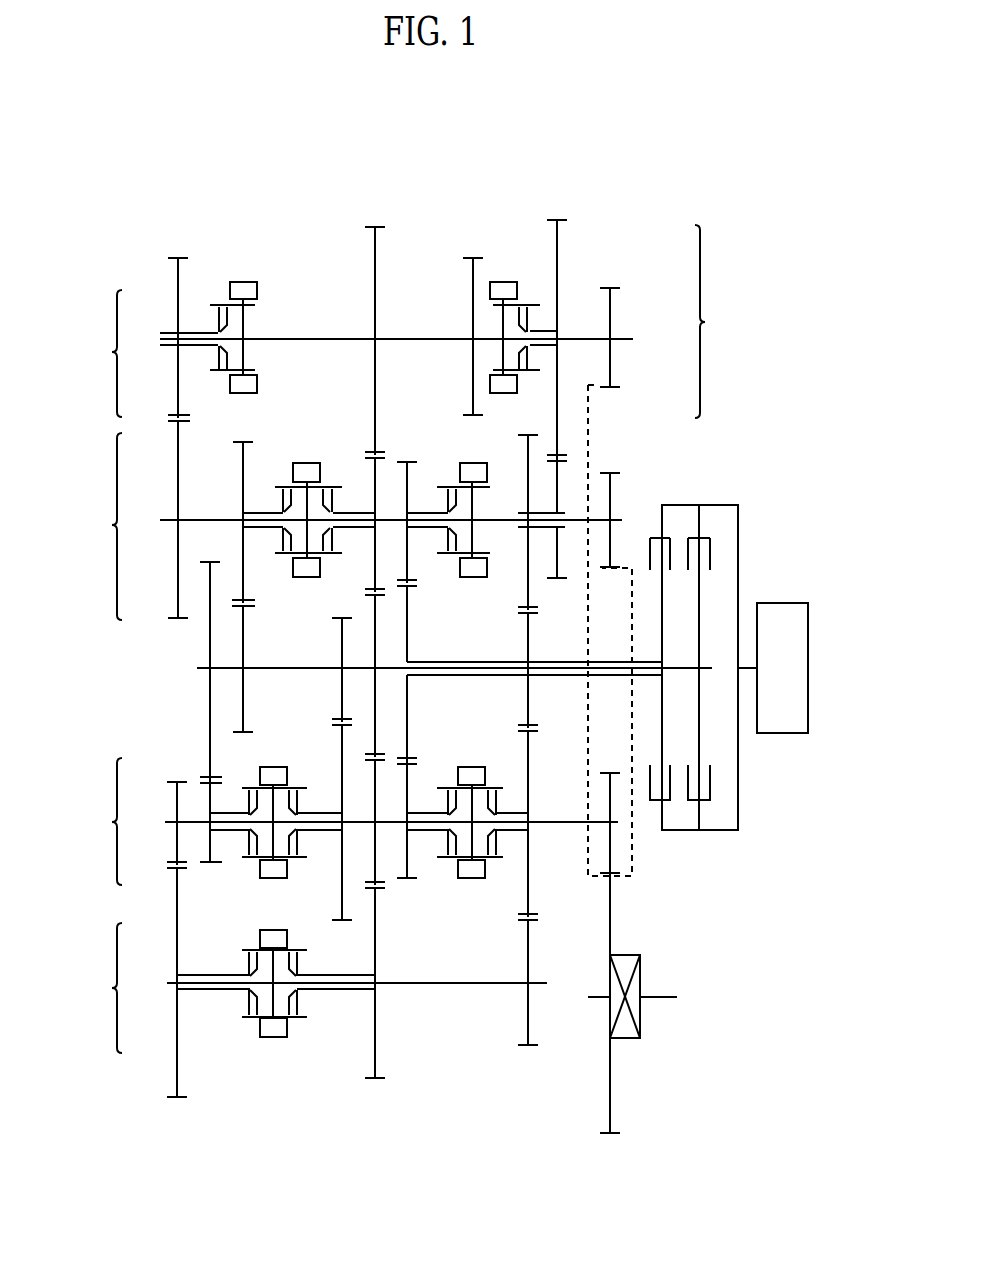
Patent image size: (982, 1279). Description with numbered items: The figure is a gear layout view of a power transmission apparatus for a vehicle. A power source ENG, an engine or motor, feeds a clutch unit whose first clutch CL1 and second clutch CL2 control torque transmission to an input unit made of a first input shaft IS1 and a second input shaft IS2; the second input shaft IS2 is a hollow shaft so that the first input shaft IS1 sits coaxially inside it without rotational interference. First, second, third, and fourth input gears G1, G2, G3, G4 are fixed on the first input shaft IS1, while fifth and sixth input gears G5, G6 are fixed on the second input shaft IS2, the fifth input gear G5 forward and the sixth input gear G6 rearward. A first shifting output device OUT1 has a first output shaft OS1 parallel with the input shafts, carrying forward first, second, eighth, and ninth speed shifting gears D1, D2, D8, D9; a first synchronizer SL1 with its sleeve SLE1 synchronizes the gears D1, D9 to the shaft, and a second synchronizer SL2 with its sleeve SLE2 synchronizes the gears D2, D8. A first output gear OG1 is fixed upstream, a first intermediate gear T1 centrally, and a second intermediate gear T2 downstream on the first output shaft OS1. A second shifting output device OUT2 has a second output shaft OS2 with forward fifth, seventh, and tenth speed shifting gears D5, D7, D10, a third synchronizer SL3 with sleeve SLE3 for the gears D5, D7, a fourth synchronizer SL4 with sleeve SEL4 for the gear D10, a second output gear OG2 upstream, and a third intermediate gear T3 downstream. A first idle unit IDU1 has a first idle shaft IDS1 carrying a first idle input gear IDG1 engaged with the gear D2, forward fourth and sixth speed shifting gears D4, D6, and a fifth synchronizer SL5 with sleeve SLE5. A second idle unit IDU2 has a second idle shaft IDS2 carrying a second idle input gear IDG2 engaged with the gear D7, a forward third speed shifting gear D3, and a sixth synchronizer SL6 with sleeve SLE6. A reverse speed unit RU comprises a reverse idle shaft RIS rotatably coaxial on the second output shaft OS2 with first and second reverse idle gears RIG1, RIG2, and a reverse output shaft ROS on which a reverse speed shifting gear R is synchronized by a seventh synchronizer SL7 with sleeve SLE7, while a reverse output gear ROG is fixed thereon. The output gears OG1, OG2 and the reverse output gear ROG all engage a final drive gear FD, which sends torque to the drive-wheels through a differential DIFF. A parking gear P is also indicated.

The second idle shaft IDS2 is at (317, 332).
The forward third speed shifting gear D3 is at (177, 291).
The third intermediate gear T3 is at (178, 576).
The second idle unit IDU2 is at (90, 353).
The sleeve of sixth synchronizer SLE6 is at (242, 281).
The sixth synchronizer SL6 is at (265, 280).
The second idle input gear IDG2 is at (378, 291).
The parking gear P is at (463, 262).
The seventh synchronizer SL7 is at (489, 208).
The sleeve of seventh synchronizer SLE7 is at (504, 282).
The reverse output shaft ROS is at (581, 336).
The reverse speed shifting gear R is at (561, 248).
The reverse output gear ROG is at (620, 306).
The reverse speed unit RU is at (720, 321).
The third synchronizer SL3 is at (327, 459).
The sleeve of third synchronizer SLE3 is at (310, 463).
The forward fifth speed shifting gear D5 is at (242, 481).
The third input gear G3 is at (245, 623).
The second output shaft OS2 is at (165, 517).
The second shifting output device OUT2 is at (89, 526).
The fourth input gear G4 is at (208, 649).
The forward ninth speed shifting gear D9 is at (226, 811).
The first input shaft IS1 is at (280, 672).
The second input gear G2 is at (340, 649).
The forward first speed shifting gear D1 is at (340, 751).
The forward seventh speed shifting gear D7 is at (382, 452).
The first input gear G1 is at (373, 604).
The first intermediate gear T1 is at (375, 838).
The forward fourth speed shifting gear D4 is at (372, 1038).
The forward tenth speed shifting gear D10 is at (417, 461).
The sixth input gear G6 is at (409, 631).
The second input shaft IS2 is at (468, 679).
The forward eighth speed shifting gear D8 is at (416, 775).
The fourth synchronizer SL4 is at (458, 441).
The sleeve of fourth synchronizer SEL4 is at (479, 465).
The reverse idle shaft RIS is at (530, 513).
The first reverse idle gear RIG1 is at (526, 583).
The second reverse idle gear RIG2 is at (558, 563).
The fifth input gear G5 is at (530, 643).
The forward second speed shifting gear D2 is at (527, 758).
The first idle input gear IDG1 is at (524, 1023).
The second output gear OG2 is at (613, 487).
The first output gear OG1 is at (607, 788).
The final drive gear FD is at (612, 913).
The differential DIFF is at (643, 977).
The second clutch CL2 is at (684, 530).
The first clutch CL1 is at (722, 530).
The power source ENG is at (782, 668).
The first output shaft OS1 is at (172, 814).
The first shifting output device OUT1 is at (89, 821).
The second intermediate gear T2 is at (173, 851).
The forward sixth speed shifting gear D6 is at (173, 1038).
The sleeve of first synchronizer SLE1 is at (272, 882).
The first synchronizer SL1 is at (256, 888).
The sleeve of second synchronizer SLE2 is at (468, 882).
The second synchronizer SL2 is at (451, 888).
The first idle unit IDU1 is at (90, 988).
The first idle shaft IDS1 is at (427, 987).
The sleeve of fifth synchronizer SLE5 is at (272, 1040).
The fifth synchronizer SL5 is at (237, 1036).